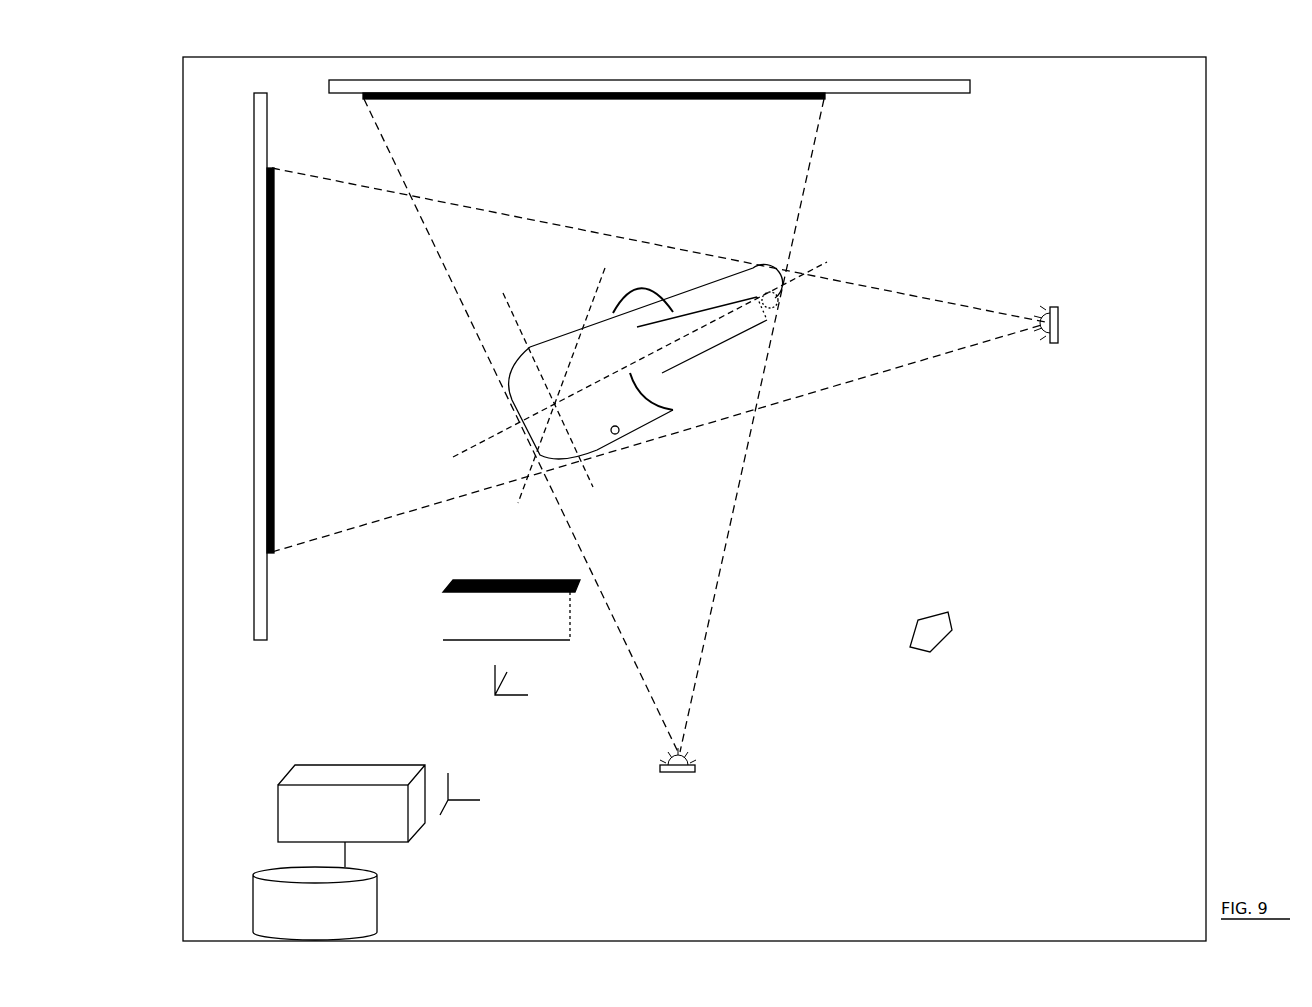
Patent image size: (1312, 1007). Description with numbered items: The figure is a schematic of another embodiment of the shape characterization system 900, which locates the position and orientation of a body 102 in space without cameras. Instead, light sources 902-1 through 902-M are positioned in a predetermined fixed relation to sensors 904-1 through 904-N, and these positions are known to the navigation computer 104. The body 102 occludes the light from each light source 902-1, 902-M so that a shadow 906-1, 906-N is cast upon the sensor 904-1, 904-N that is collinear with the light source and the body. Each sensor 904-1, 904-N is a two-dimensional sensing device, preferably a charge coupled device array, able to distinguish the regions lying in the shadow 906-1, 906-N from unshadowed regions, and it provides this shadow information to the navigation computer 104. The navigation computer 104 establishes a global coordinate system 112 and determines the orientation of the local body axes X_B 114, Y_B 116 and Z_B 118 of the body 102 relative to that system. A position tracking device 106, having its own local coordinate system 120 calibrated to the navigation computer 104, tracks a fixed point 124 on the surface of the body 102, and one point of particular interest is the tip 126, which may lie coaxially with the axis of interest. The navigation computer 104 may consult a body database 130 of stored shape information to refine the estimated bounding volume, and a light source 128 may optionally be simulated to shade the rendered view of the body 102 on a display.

The shape characterization system 900 is at (181, 631).
The sensor 904-1 is at (268, 613).
The shadow 906-1 is at (274, 360).
The sensor 904-N is at (908, 93).
The shadow 906-N is at (740, 99).
The light source 902-1 is at (1052, 348).
The light source 902-M is at (667, 780).
The body 102 is at (723, 280).
The body axis X_B 114 is at (827, 255).
The body axis Y_B 116 is at (508, 307).
The body axis Z_B 118 is at (592, 272).
The fixed point 124 is at (618, 436).
The tip 126 is at (762, 305).
The light source 128 is at (952, 622).
The position tracking device 106 is at (440, 641).
The local coordinate system 120 is at (510, 701).
The navigation computer 104 is at (393, 845).
The global coordinate system 112 is at (480, 823).
The body database 130 is at (377, 897).